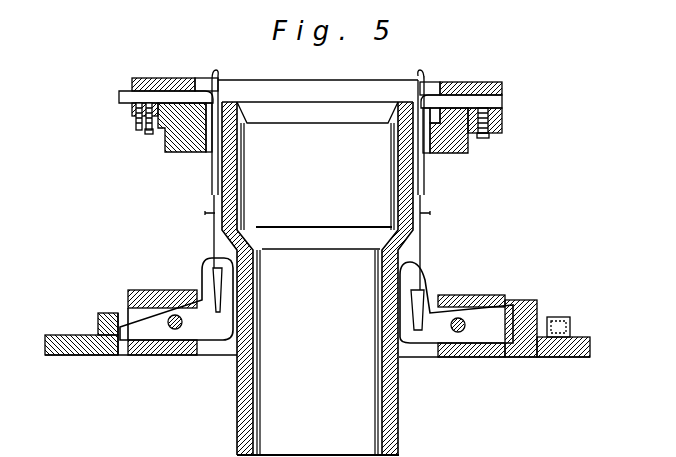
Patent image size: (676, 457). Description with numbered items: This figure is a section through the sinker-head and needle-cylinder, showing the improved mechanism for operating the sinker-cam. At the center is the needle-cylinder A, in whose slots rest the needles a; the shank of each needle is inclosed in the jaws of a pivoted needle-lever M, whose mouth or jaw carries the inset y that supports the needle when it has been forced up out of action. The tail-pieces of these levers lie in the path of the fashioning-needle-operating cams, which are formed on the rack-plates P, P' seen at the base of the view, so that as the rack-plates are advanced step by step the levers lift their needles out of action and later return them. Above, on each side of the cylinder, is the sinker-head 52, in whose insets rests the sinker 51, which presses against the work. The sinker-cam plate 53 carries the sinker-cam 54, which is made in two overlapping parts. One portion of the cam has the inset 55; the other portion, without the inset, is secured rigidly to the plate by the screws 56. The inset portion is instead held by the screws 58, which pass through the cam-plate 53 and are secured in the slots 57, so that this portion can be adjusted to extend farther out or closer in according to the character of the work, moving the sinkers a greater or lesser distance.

The sinker 51 is at (128, 99).
The sinker-head 52 is at (460, 153).
The sinker-cam plate 53 is at (486, 136).
The sinker-cam 54 is at (503, 110).
The inset 55 is at (133, 110).
The screws 56 is at (492, 138).
The slots 57 is at (137, 122).
The screws 58 is at (148, 134).
The needle-cylinder A is at (318, 267).
The needles a is at (214, 238).
The inset y is at (422, 292).
The needle-lever M is at (428, 310).
The rack-plate P is at (141, 342).
The rack-plate P' is at (494, 344).